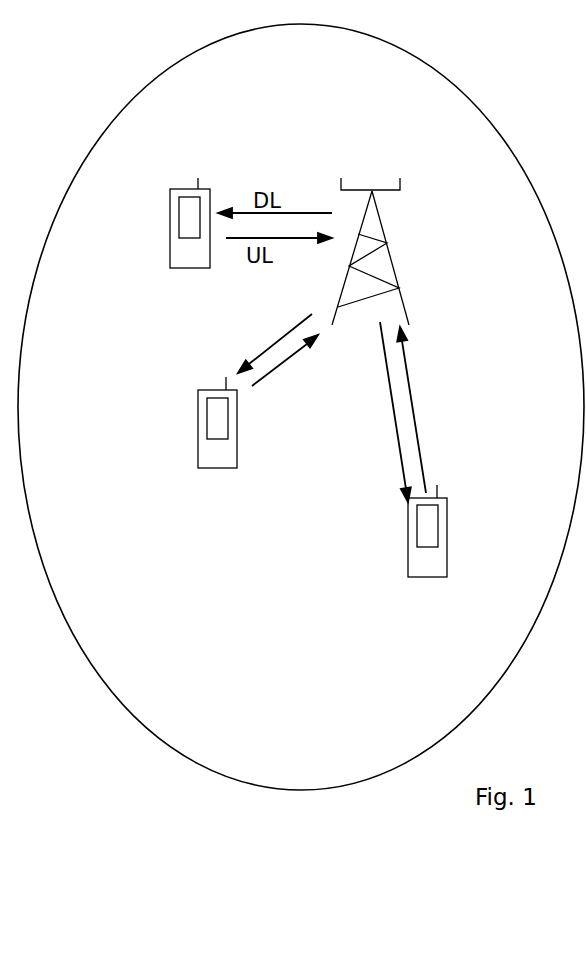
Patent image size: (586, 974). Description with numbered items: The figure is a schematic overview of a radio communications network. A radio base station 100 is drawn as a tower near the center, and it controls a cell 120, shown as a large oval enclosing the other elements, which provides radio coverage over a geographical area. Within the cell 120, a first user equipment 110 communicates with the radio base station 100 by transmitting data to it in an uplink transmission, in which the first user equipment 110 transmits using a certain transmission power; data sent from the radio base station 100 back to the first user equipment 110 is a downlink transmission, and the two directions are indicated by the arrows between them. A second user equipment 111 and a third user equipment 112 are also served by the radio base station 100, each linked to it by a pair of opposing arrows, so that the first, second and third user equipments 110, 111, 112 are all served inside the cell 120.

The radio base station 100 is at (397, 265).
The first user equipment 110 is at (166, 240).
The second user equipment 111 is at (197, 428).
The third user equipment 112 is at (406, 511).
The cell 120 is at (418, 56).